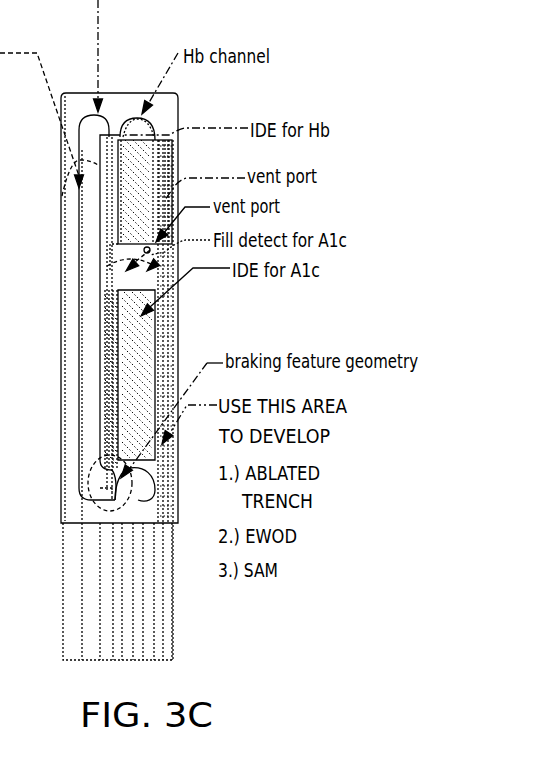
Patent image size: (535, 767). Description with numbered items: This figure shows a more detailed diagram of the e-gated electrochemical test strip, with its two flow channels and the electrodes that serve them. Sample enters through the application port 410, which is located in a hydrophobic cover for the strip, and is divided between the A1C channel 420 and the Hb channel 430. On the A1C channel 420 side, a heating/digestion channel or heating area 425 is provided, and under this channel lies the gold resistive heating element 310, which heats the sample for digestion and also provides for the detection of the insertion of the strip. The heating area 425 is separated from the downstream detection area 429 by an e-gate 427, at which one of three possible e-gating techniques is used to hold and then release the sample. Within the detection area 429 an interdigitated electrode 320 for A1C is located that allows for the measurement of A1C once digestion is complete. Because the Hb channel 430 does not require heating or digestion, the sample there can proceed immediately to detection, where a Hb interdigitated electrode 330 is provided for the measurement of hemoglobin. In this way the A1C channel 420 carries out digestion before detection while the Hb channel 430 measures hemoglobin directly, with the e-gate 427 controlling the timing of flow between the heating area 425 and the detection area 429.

The gold resistive heating element 310 is at (62, 218).
The interdigitated electrode for A1C 320 is at (172, 314).
The Hb interdigitated electrode 330 is at (152, 170).
The application port 410 is at (126, 134).
The A1C channel 420 is at (97, 133).
The heating area 425 is at (90, 110).
The e-gate 427 is at (130, 503).
The detection area 429 is at (163, 343).
The Hb channel 430 is at (128, 153).